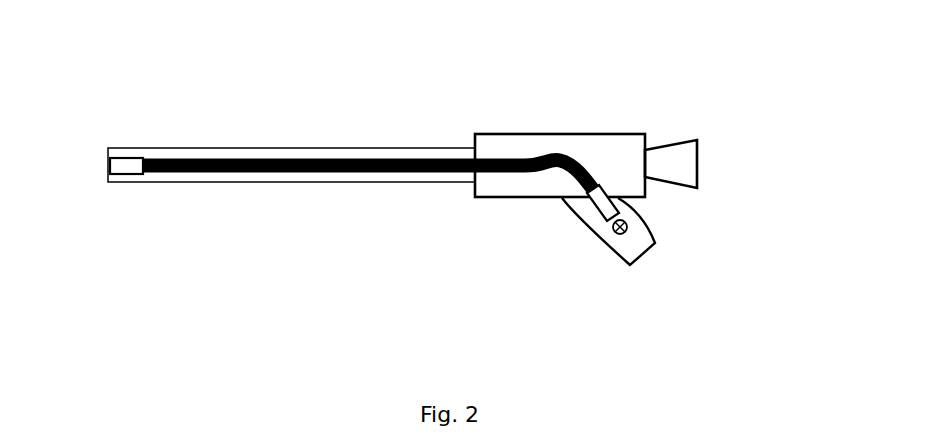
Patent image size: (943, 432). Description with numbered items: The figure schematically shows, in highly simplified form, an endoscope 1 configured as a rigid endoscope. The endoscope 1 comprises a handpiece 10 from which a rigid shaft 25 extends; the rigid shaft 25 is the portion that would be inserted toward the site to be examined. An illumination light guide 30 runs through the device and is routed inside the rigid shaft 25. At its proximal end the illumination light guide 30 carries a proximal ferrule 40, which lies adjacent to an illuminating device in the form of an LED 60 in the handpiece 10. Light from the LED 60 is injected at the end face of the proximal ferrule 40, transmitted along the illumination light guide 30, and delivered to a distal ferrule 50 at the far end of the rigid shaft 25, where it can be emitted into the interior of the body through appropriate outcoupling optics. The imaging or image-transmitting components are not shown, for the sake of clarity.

The endoscope 1 is at (643, 127).
The handpiece 10 is at (572, 133).
The rigid shaft 25 is at (420, 182).
The illumination light guide 30 is at (450, 172).
The proximal ferrule 40 is at (600, 215).
The distal ferrule 50 is at (127, 163).
The LED 60 is at (627, 233).